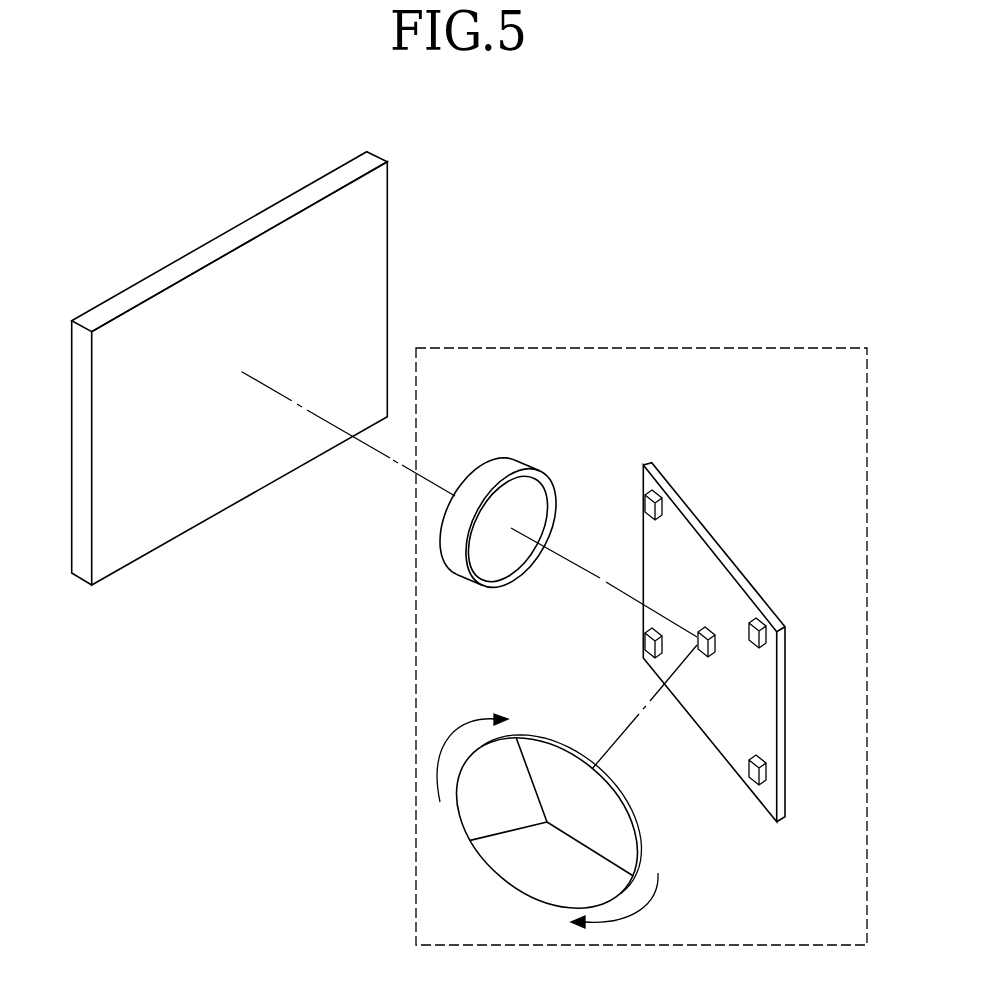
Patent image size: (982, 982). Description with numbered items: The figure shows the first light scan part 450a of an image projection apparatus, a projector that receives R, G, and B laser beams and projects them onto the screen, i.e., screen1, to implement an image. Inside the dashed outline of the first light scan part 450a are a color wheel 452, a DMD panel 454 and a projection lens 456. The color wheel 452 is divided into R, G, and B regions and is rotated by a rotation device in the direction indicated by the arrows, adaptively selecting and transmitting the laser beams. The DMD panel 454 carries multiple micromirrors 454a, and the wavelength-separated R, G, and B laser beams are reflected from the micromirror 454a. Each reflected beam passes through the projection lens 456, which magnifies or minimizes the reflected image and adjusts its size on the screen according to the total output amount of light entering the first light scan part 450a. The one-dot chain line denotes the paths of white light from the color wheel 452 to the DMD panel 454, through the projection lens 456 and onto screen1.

The screen screen1 is at (387, 251).
The first light scan part 450a is at (750, 350).
The color wheel 452 is at (637, 845).
The DMD panel 454 is at (747, 629).
The micromirror 454a is at (703, 627).
The projection lens 456 is at (510, 461).